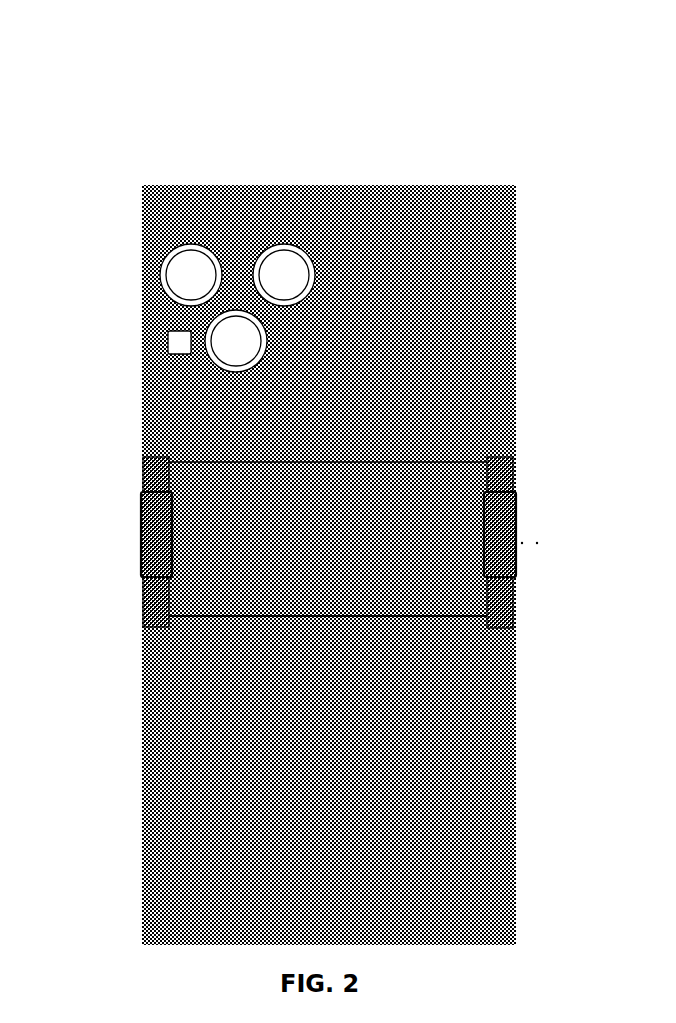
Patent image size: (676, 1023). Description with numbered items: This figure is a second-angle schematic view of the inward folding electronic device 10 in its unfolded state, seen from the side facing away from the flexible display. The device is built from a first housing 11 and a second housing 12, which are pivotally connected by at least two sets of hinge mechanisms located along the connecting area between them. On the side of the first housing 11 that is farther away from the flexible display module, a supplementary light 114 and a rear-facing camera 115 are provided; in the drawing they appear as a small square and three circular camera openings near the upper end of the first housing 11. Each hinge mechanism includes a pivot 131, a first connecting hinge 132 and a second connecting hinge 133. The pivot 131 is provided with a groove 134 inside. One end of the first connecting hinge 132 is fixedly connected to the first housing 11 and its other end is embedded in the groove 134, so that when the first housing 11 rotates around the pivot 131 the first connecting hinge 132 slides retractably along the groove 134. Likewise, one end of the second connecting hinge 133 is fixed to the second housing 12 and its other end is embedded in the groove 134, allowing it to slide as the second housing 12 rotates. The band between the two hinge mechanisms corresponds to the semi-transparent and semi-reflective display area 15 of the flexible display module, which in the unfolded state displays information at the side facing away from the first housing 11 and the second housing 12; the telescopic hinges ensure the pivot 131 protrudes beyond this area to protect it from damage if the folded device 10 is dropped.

The inward folding electronic device 10 is at (155, 82).
The first housing 11 is at (514, 302).
The second housing 12 is at (200, 840).
The semi-transparent and semi-reflective display area 15 is at (217, 613).
The supplementary light 114 is at (171, 331).
The rear-facing camera 115 is at (236, 333).
The pivot 131 is at (142, 517).
The first connecting hinge 132 is at (145, 462).
The second connecting hinge 133 is at (145, 613).
The groove 134 is at (142, 534).